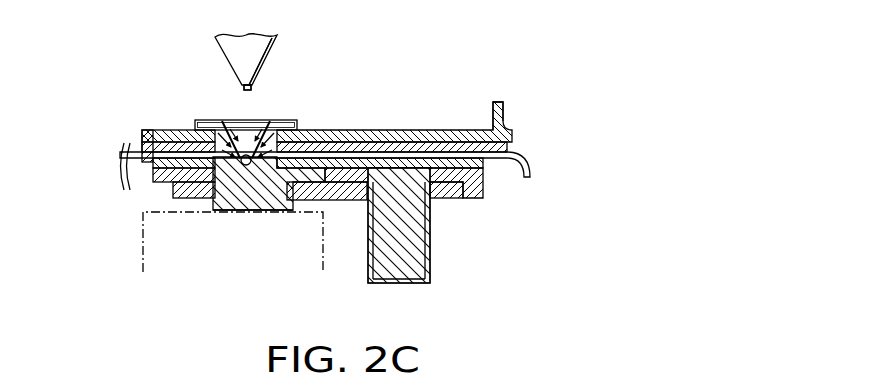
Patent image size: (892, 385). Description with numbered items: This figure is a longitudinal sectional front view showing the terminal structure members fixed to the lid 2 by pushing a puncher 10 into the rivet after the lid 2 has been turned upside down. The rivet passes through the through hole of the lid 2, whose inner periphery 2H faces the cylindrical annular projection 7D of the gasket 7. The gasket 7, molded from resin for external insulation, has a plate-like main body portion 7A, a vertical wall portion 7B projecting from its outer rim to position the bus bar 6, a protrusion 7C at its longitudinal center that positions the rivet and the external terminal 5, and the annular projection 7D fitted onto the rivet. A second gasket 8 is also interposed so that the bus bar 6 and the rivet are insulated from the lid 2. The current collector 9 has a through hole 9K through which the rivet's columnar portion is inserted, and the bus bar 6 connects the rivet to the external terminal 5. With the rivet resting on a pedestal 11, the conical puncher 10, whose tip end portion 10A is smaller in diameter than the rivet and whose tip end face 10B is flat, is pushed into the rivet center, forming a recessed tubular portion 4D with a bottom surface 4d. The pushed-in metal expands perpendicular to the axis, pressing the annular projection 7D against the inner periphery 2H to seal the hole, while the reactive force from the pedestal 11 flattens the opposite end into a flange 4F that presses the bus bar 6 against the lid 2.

The lid 2 is at (531, 168).
The inner periphery of the through hole 2H is at (197, 121).
The recessed tubular portion 4D is at (238, 124).
The bottom surface of the tubular portion 4d is at (249, 166).
The flange 4F is at (213, 212).
The external terminal 5 is at (400, 284).
The bus bar 6 is at (442, 199).
The gasket 7 is at (472, 199).
The main body portion 7A is at (393, 152).
The vertical wall portion 7B is at (165, 186).
The protrusion 7C is at (328, 176).
The annular projection 7D is at (280, 188).
The gasket 8 is at (515, 138).
The current collector 9 is at (505, 108).
The through hole 9K is at (293, 119).
The puncher 10 is at (273, 50).
The tip end portion 10A is at (258, 81).
The tip end face 10B is at (250, 90).
The pedestal 11 is at (323, 258).